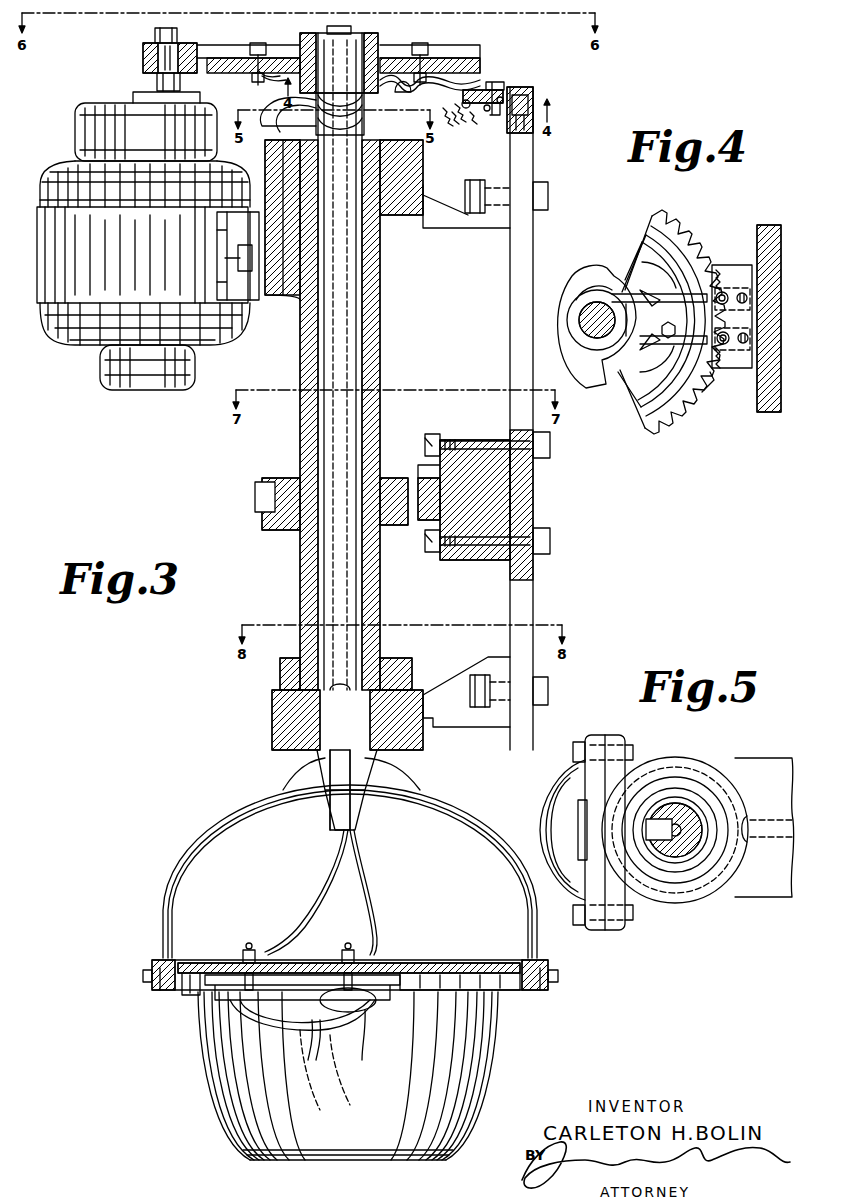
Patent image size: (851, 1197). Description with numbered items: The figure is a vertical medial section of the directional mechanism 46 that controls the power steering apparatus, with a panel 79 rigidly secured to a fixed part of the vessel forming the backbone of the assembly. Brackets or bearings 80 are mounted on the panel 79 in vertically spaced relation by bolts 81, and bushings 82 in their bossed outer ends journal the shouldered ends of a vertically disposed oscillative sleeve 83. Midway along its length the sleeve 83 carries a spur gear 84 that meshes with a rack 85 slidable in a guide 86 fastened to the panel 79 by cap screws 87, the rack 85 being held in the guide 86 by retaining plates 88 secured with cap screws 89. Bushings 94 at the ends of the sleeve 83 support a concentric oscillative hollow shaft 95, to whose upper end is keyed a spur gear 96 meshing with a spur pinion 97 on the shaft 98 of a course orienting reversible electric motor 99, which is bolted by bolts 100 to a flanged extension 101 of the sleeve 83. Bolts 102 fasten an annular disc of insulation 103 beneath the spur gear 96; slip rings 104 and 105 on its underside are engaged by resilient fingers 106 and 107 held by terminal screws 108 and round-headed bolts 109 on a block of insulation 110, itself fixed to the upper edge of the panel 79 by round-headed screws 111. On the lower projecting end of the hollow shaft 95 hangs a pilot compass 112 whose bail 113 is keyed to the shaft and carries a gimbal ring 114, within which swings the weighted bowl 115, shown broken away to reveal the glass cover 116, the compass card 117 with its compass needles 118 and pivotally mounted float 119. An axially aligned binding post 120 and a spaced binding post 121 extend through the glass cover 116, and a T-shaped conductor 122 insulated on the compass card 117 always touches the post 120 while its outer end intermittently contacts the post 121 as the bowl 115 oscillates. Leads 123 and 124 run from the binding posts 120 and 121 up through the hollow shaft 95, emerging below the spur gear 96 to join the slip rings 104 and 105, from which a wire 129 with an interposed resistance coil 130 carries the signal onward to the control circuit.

In FIG. 3, the directional mechanism 46 is at (260, 476).
In FIG. 4, the directional mechanism 46 is at (680, 450).
In FIG. 5, the directional mechanism 46 is at (704, 918).
In FIG. 3, the panel 79 is at (537, 600).
In FIG. 4, the panel 79 is at (766, 412).
In FIG. 3, the brackets or bearings 80 is at (440, 226).
In FIG. 5, the brackets or bearings 80 is at (768, 898).
In FIG. 3, the bolts 81 is at (476, 216).
In FIG. 3, the bushings 82 is at (408, 222).
In FIG. 5, the bushings 82 is at (660, 788).
In FIG. 3, the oscillative sleeve 83 is at (302, 566).
In FIG. 5, the oscillative sleeve 83 is at (668, 874).
In FIG. 3, the spur gear 84 is at (262, 500).
In FIG. 3, the rack 85 is at (425, 522).
In FIG. 3, the guide 86 is at (484, 562).
In FIG. 3, the cap screws 87 is at (550, 542).
In FIG. 3, the retaining plates 88 is at (438, 444).
In FIG. 3, the cap screws 89 is at (426, 442).
In FIG. 3, the bushings 94 is at (268, 140).
In FIG. 5, the bushings 94 is at (680, 800).
In FIG. 3, the hollow shaft 95 is at (318, 432).
In FIG. 4, the hollow shaft 95 is at (586, 312).
In FIG. 5, the hollow shaft 95 is at (700, 812).
In FIG. 3, the spur gear 96 is at (480, 48).
In FIG. 4, the spur gear 96 is at (650, 446).
In FIG. 3, the spur pinion 97 is at (150, 50).
In FIG. 3, the motor shaft 98 is at (158, 83).
In FIG. 3, the reversible electric motor 99 is at (72, 128).
In FIG. 5, the reversible electric motor 99 is at (542, 826).
In FIG. 3, the bolts 100 is at (236, 260).
In FIG. 5, the bolts 100 is at (580, 752).
In FIG. 3, the flanged extension 101 is at (262, 302).
In FIG. 5, the flanged extension 101 is at (613, 740).
In FIG. 3, the bolts 102 is at (258, 44).
In FIG. 4, the bolts 102 is at (666, 336).
In FIG. 3, the annular disc of insulation 103 is at (470, 70).
In FIG. 4, the annular disc of insulation 103 is at (626, 400).
In FIG. 3, the slip ring 104 is at (395, 88).
In FIG. 4, the slip ring 104 is at (604, 270).
In FIG. 3, the slip ring 105 is at (260, 72).
In FIG. 4, the slip ring 105 is at (640, 232).
In FIG. 3, the resilient finger 106 is at (440, 108).
In FIG. 4, the resilient finger 106 is at (684, 406).
In FIG. 3, the resilient finger 107 is at (455, 86).
In FIG. 4, the resilient finger 107 is at (630, 290).
In FIG. 3, the terminal screws 108 is at (490, 112).
In FIG. 4, the terminal screws 108 is at (720, 292).
In FIG. 3, the round-headed bolts 109 is at (512, 124).
In FIG. 4, the round-headed bolts 109 is at (744, 292).
In FIG. 3, the block of insulation 110 is at (537, 96).
In FIG. 4, the block of insulation 110 is at (740, 264).
In FIG. 3, the round-headed screws 111 is at (500, 84).
In FIG. 3, the pilot compass 112 is at (195, 1030).
In FIG. 3, the bail 113 is at (180, 870).
In FIG. 3, the gimbal ring 114 is at (175, 992).
In FIG. 3, the weighted bowl 115 is at (232, 1120).
In FIG. 3, the glass cover 116 is at (380, 964).
In FIG. 3, the compass card 117 is at (218, 963).
In FIG. 3, the compass needles 118 is at (302, 1037).
In FIG. 3, the float 119 is at (354, 1031).
In FIG. 3, the binding post 120 is at (348, 950).
In FIG. 3, the binding post 121 is at (249, 948).
In FIG. 3, the T-shaped conductor 122 is at (300, 964).
In FIG. 3, the wire or lead 123 is at (264, 112).
In FIG. 3, the wire or lead 124 is at (264, 100).
In FIG. 3, the wire 129 is at (454, 124).
In FIG. 4, the wire 129 is at (718, 266).
In FIG. 3, the resistance coil 130 is at (474, 128).
In FIG. 4, the resistance coil 130 is at (722, 372).